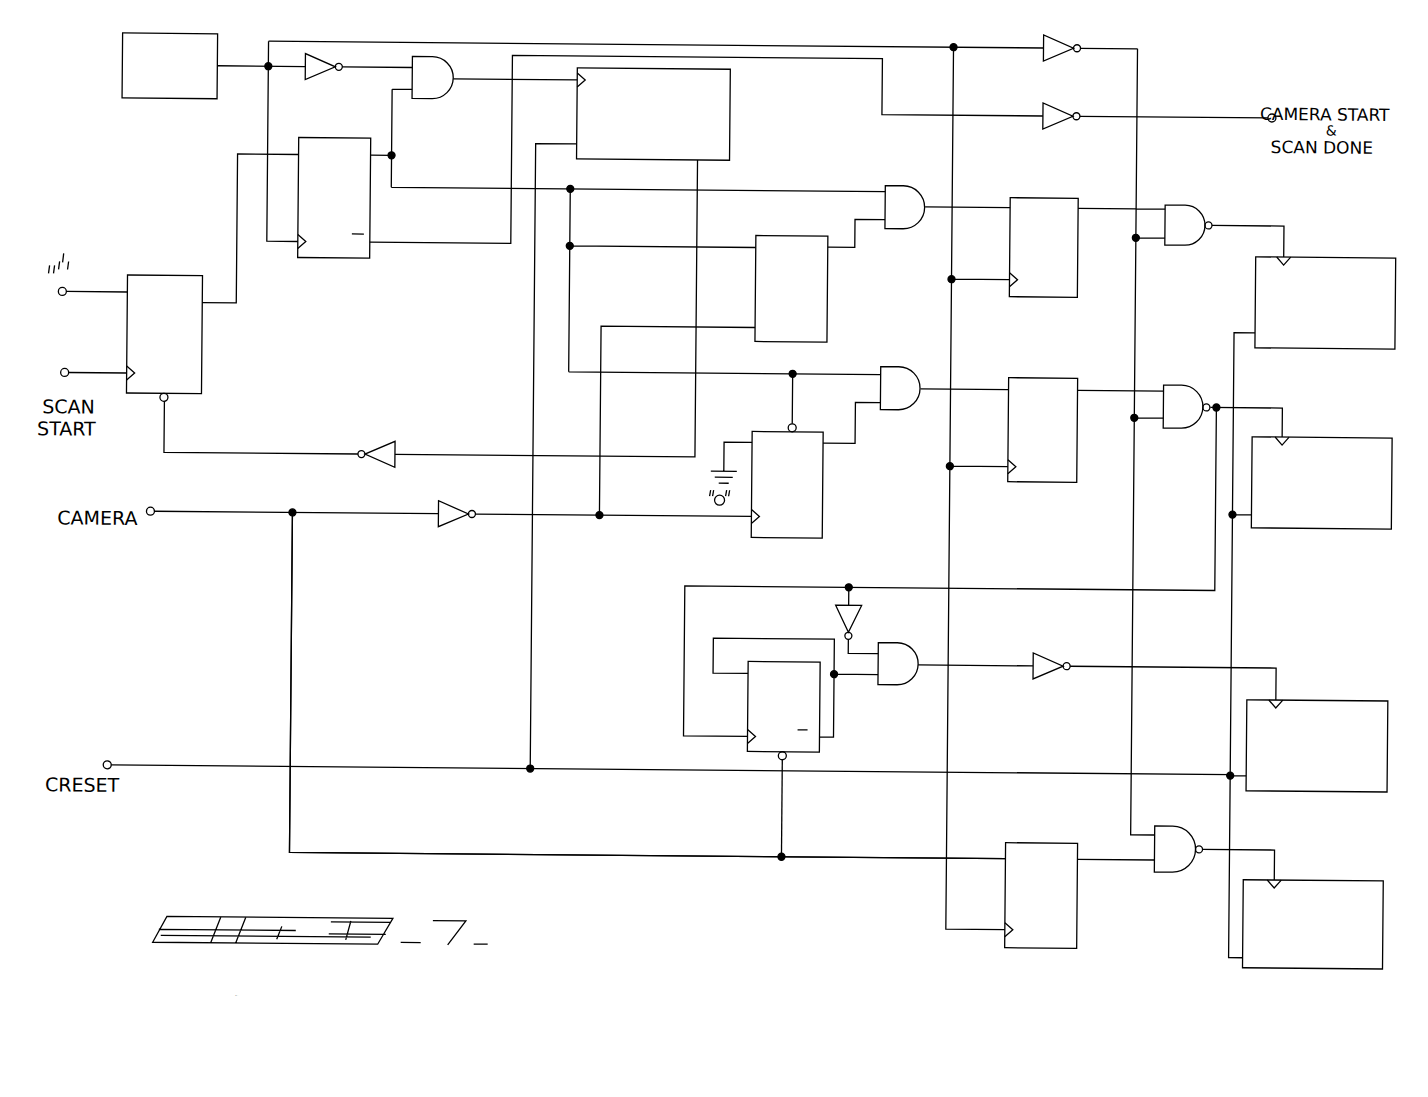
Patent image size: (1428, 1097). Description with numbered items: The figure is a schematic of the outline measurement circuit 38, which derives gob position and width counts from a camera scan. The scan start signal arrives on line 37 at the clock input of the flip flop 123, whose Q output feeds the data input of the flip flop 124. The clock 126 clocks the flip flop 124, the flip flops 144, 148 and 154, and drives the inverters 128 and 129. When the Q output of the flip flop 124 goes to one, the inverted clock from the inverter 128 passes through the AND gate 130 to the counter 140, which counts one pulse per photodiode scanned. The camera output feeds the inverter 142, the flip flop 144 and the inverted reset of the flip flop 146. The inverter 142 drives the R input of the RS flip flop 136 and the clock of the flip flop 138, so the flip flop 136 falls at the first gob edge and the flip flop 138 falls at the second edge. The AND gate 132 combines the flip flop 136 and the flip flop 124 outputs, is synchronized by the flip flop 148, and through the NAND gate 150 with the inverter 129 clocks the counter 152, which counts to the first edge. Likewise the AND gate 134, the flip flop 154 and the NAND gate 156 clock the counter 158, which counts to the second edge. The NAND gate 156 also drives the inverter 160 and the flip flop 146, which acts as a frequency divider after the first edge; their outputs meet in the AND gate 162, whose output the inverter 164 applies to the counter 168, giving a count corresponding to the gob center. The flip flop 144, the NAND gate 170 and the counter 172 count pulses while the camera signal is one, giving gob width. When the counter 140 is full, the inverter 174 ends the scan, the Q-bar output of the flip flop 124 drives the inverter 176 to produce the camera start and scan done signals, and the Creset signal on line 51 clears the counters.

The clock 126 is at (148, 103).
The inverter 128 is at (316, 83).
The AND gate 130 is at (437, 101).
The flip flop 124 is at (330, 261).
The counter 140 is at (727, 117).
The flip flop 123 is at (201, 362).
The line 37 is at (100, 351).
The inverter 174 is at (383, 444).
The inverter 142 is at (447, 529).
The AND gate 132 is at (903, 227).
The RS flip flop 136 is at (826, 303).
The AND gate 134 is at (898, 408).
The flip flop 138 is at (823, 511).
The inverter 129 is at (1052, 58).
The inverter 176 is at (1052, 126).
The flip flop 148 is at (1030, 294).
The NAND gate 150 is at (1181, 241).
The counter 152 is at (1357, 222).
The flip flop 154 is at (1030, 479).
The NAND gate 156 is at (1181, 424).
The counter 158 is at (1357, 404).
The inverter 160 is at (858, 618).
The AND gate 162 is at (898, 683).
The inverter 164 is at (1044, 676).
The flip flop 146 is at (750, 702).
The flip flop 144 is at (1055, 806).
The NAND gate 170 is at (1176, 868).
The counter 168 is at (1348, 666).
The counter 172 is at (1350, 849).
The line 51 is at (196, 737).
The outline measurement circuit 38 is at (272, 842).